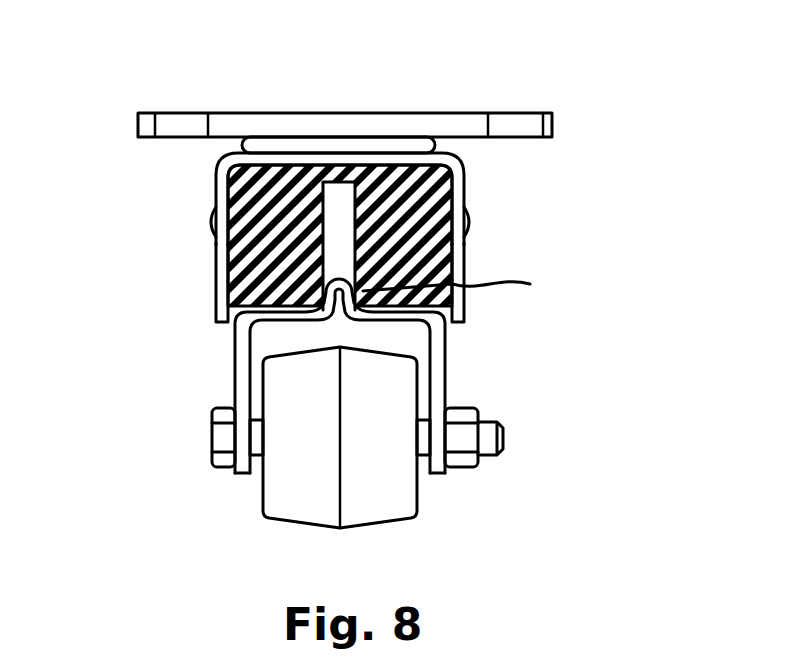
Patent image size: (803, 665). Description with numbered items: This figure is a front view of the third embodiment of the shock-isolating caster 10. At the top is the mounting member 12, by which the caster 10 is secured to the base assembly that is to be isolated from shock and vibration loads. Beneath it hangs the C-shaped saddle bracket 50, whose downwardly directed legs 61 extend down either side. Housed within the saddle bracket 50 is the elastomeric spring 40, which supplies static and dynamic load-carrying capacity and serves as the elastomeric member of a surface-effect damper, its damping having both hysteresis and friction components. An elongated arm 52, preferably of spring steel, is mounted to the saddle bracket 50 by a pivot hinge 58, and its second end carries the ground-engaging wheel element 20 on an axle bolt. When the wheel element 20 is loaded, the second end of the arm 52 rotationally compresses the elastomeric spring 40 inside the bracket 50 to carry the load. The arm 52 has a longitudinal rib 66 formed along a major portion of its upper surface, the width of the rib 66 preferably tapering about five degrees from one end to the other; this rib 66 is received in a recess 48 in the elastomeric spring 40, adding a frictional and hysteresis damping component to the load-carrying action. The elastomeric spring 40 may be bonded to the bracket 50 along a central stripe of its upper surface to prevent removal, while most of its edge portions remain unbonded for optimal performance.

The shock-isolating caster 10 is at (503, 512).
The mounting member 12 is at (430, 112).
The wheel element 20 is at (263, 497).
The elastomeric spring 40 is at (382, 218).
The recess 48 is at (353, 243).
The C-shaped saddle bracket 50 is at (214, 183).
The elongated arm 52 is at (236, 373).
The pivot hinge 58 is at (208, 225).
The legs 61 is at (214, 288).
The longitudinal rib 66 is at (462, 289).